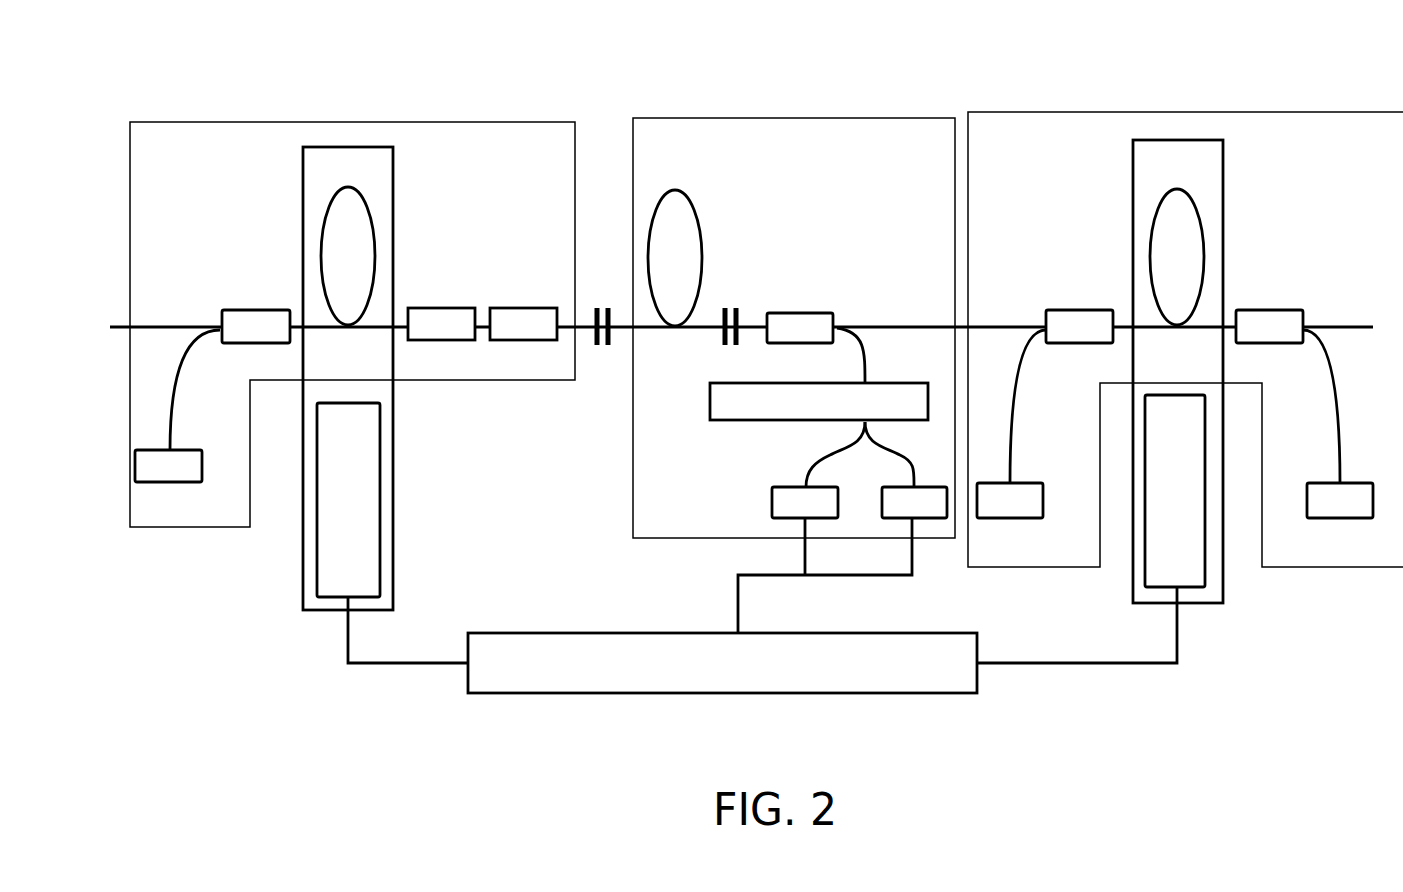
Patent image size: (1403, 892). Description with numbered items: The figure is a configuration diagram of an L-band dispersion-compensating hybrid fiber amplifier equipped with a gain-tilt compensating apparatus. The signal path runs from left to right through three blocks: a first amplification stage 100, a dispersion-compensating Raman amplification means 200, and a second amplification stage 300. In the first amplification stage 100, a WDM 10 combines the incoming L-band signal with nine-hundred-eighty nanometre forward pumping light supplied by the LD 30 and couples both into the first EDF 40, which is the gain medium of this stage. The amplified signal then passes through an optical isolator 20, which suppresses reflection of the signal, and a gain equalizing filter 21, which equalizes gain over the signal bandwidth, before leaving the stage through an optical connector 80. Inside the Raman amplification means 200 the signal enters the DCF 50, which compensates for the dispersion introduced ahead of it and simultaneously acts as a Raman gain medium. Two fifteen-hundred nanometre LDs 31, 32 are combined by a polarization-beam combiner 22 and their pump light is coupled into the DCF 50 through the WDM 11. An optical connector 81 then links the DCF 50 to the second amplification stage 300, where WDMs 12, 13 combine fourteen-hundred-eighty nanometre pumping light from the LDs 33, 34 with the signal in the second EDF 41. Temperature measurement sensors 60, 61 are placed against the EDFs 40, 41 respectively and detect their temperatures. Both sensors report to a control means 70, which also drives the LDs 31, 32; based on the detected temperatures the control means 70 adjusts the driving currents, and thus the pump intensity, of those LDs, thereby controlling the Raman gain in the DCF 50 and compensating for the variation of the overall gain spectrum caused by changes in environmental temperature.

The first amplification stage 100 is at (337, 122).
The dispersion-compensating Raman amplification means 200 is at (782, 118).
The second amplification stage 300 is at (1178, 112).
The wavelength-division multiplexer 10 is at (232, 310).
The wavelength-division multiplexer 11 is at (805, 313).
The wavelength-division multiplexer 12 is at (1068, 310).
The wavelength-division multiplexer 13 is at (1285, 310).
The optical isolator 20 is at (436, 308).
The gain equalizing filter 21 is at (527, 308).
The polarization-beam combiner 22 is at (710, 398).
The 980-nm LD 30 is at (197, 450).
The 1500-nm LD 31 is at (772, 500).
The 1500-nm LD 32 is at (926, 487).
The 1480-nm LD 33 is at (1033, 490).
The 1480-nm LD 34 is at (1358, 483).
The EDF 40 is at (375, 222).
The EDF 41 is at (1200, 235).
The DCF 50 is at (702, 225).
The temperature measurement sensor 60 is at (380, 435).
The temperature measurement sensor 61 is at (1200, 590).
The control means 70 is at (940, 693).
The optical connector 80 is at (603, 344).
The optical connector 81 is at (732, 344).